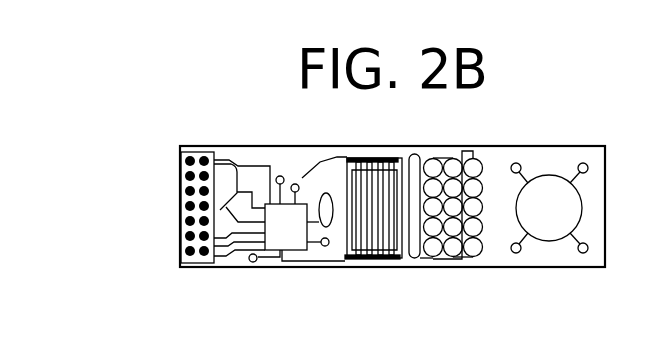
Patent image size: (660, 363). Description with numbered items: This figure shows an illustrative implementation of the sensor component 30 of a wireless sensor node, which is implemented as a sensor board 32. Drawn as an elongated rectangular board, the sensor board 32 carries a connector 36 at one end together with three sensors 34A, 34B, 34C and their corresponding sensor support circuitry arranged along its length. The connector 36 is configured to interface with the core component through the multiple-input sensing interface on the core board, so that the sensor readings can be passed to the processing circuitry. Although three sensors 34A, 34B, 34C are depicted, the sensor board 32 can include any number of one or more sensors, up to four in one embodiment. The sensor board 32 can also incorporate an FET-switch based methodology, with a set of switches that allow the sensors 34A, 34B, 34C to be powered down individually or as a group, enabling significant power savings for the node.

The sensor component 30 is at (180, 126).
The sensor board 32 is at (600, 148).
The connector 36 is at (180, 217).
The sensor 34A is at (378, 285).
The sensor 34B is at (449, 285).
The sensor 34C is at (560, 285).